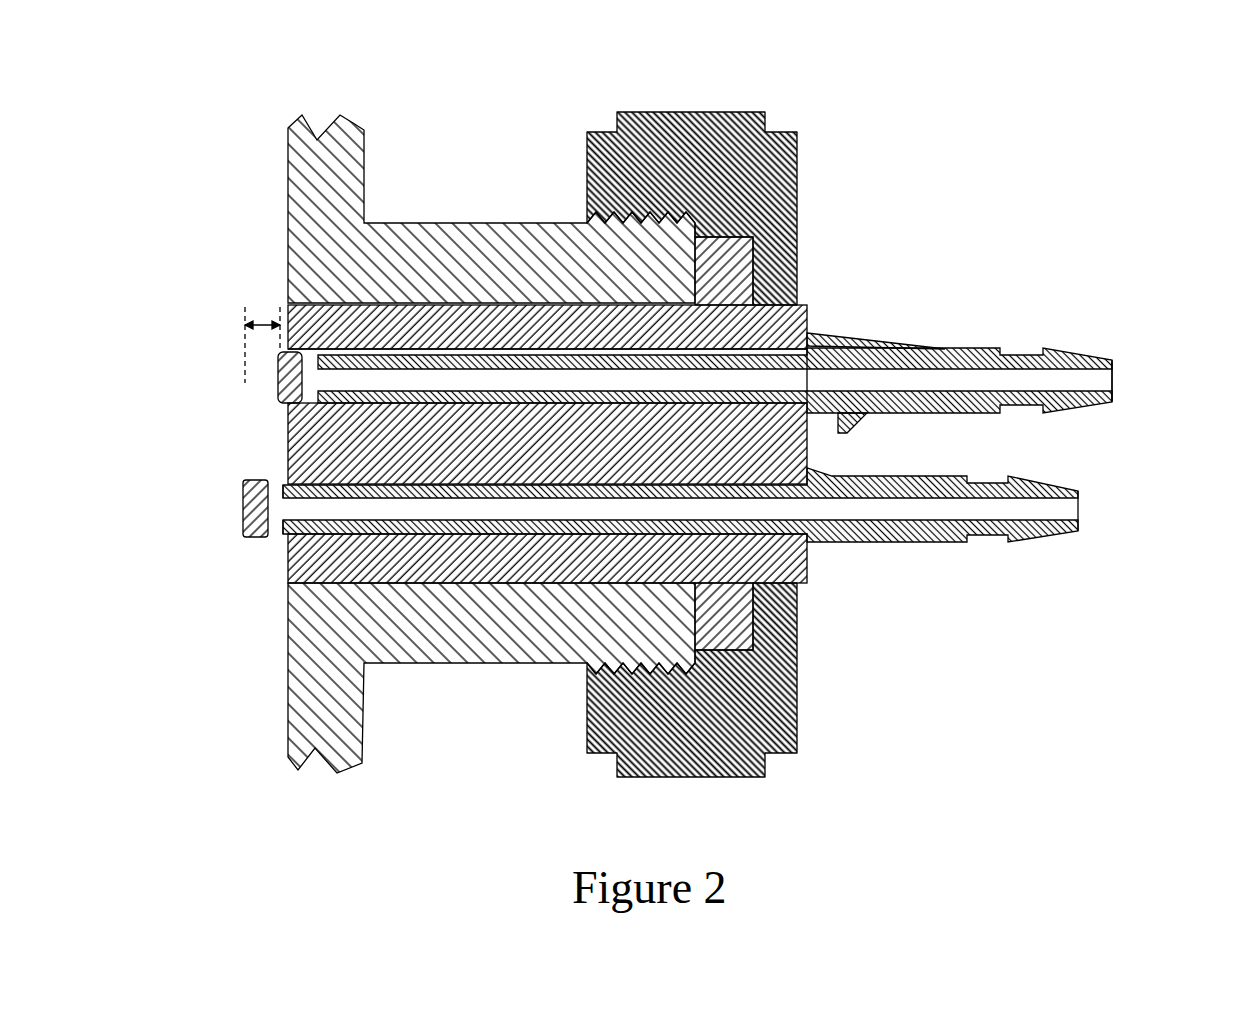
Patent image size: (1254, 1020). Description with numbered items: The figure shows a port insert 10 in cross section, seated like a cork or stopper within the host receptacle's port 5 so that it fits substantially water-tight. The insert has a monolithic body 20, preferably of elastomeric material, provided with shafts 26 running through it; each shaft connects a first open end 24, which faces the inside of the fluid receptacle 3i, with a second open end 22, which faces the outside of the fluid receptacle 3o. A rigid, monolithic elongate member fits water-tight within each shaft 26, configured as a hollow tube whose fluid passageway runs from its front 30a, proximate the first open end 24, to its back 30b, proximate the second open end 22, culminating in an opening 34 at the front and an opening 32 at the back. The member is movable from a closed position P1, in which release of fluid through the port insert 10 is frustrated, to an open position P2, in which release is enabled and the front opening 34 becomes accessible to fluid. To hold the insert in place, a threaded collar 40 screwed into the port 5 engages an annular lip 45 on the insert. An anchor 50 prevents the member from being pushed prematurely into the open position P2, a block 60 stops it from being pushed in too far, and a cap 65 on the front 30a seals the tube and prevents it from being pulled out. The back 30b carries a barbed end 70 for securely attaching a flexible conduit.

The port insert 10 is at (1012, 202).
The closed position P1 is at (280, 307).
The open position P2 is at (245, 307).
The shaft 26 is at (315, 340).
The threaded collar 40 is at (718, 184).
The port 5 is at (523, 284).
The anchor 50 is at (840, 333).
The barbed end 70 is at (1045, 348).
The back of elongate member 30b is at (1073, 381).
The front of elongate member 30a is at (328, 378).
The block 60 is at (868, 423).
The second open end 22 is at (808, 417).
The opening 32 is at (1113, 383).
The first open end 24 is at (283, 484).
The cap 65 is at (246, 512).
The opening 34 is at (273, 525).
The inside of fluid receptacle 3i is at (83, 583).
The body 20 is at (287, 565).
The outside of fluid receptacle 3o is at (875, 605).
The annular lip 45 is at (747, 632).